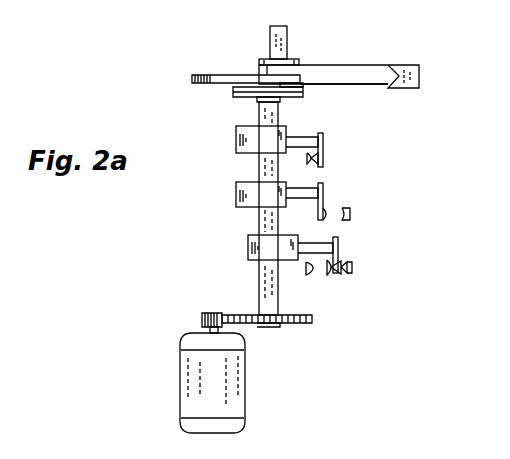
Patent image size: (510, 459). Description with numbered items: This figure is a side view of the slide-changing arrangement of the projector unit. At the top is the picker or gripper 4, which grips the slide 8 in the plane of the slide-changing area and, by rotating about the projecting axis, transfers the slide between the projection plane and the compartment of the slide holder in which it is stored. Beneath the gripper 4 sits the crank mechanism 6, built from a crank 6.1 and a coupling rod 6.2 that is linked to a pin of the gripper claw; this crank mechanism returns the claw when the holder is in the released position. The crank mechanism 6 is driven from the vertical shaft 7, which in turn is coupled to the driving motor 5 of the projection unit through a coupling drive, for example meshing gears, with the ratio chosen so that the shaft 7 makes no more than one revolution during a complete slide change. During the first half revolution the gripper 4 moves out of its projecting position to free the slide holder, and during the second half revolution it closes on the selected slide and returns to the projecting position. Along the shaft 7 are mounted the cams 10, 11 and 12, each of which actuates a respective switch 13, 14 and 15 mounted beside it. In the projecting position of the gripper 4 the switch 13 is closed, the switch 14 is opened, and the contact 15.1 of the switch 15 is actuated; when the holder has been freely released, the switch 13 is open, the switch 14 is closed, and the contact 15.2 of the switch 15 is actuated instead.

The picker 4 is at (375, 62).
The driving motor 5 is at (235, 388).
The crank mechanism 6 is at (290, 97).
The crank 6.1 is at (233, 93).
The coupling rod 6.2 is at (306, 87).
The shaft 7 is at (263, 280).
The slide 8 is at (366, 85).
The cam 10 is at (236, 139).
The cam 11 is at (236, 192).
The cam 12 is at (248, 243).
The switch 13 is at (324, 138).
The switch 14 is at (324, 190).
The switch 15 is at (338, 247).
The contact 15.1 is at (353, 268).
The contact 15.2 is at (313, 275).